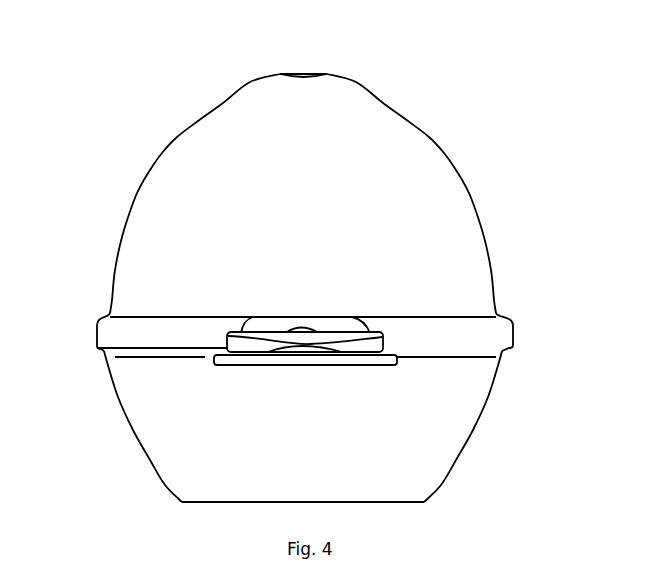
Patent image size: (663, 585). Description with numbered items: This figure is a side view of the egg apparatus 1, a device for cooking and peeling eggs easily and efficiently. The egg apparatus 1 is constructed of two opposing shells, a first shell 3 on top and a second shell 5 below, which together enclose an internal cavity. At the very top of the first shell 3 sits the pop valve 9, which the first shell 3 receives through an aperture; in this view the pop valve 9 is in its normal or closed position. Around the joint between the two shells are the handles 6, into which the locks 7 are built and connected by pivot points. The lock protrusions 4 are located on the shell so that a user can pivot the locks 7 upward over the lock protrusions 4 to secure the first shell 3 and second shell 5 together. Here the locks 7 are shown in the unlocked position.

The egg apparatus 1 is at (312, 251).
The first shell 3 is at (427, 176).
The lock protrusions 4 is at (273, 327).
The second shell 5 is at (468, 432).
The handles 6 is at (228, 357).
The locks 7 is at (376, 343).
The pop valve 9 is at (300, 73).